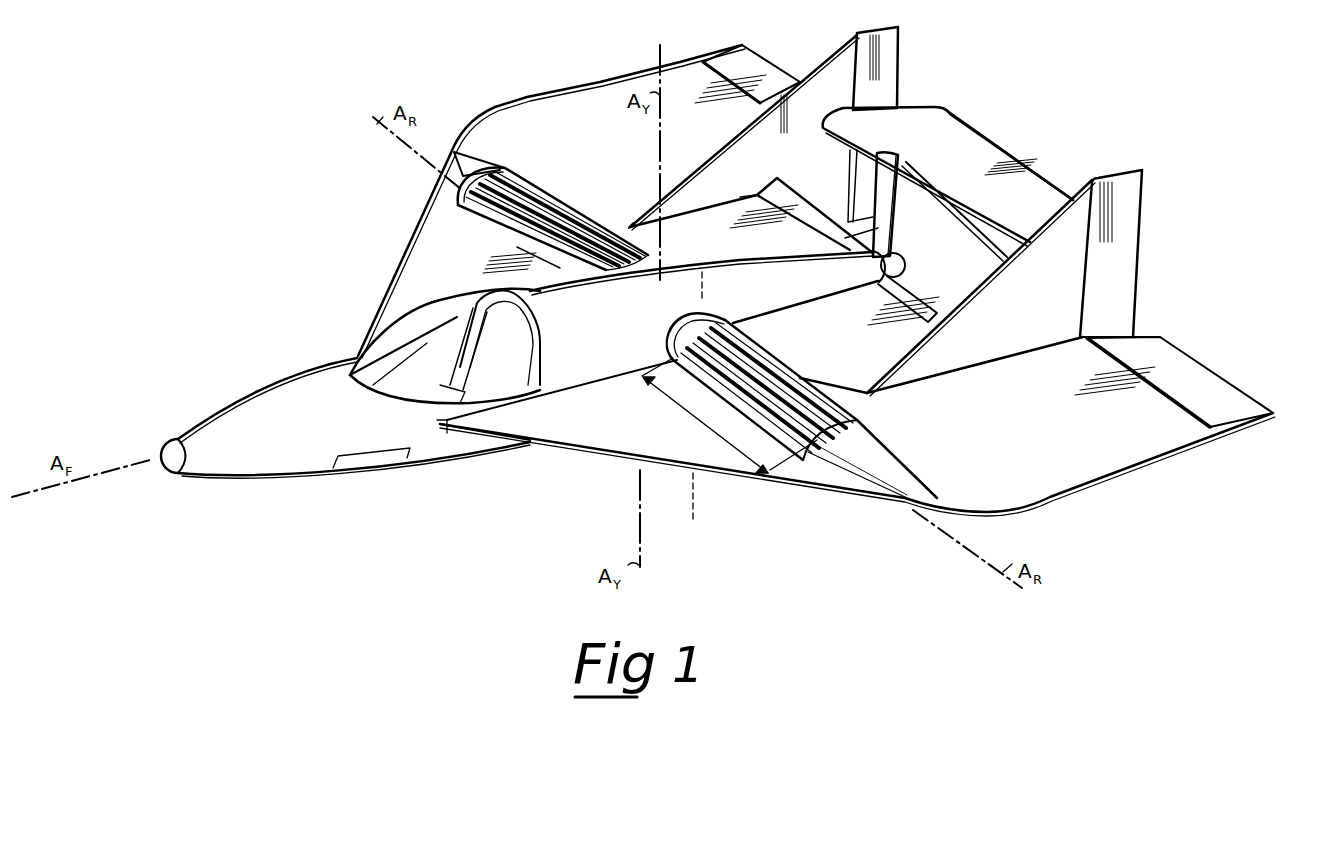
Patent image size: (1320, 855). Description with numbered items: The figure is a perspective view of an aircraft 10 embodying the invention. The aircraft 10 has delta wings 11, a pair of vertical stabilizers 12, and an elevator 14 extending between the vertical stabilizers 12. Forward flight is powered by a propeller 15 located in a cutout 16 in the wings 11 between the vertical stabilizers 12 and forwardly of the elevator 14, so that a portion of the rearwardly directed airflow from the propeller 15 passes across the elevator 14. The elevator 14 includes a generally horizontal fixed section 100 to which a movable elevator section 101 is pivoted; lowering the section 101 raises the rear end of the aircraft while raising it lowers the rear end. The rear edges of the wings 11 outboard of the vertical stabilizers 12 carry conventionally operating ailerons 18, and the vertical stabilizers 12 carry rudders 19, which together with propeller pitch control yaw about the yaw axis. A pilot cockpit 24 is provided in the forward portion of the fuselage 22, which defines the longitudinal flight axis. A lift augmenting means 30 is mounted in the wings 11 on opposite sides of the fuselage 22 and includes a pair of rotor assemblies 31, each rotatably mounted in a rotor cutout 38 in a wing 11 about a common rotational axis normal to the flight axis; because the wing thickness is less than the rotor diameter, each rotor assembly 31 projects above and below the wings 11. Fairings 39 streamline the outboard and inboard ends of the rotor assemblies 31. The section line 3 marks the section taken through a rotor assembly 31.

The section line 3- 3 is at (703, 275).
The aircraft 10 is at (325, 352).
The delta wings 11 is at (400, 266).
The vertical stabilizers 12 is at (973, 365).
The elevator 14 is at (948, 174).
The propeller 15 is at (893, 232).
The cutout 16 is at (940, 295).
The ailerons 18 is at (763, 63).
The rudders 19 is at (893, 63).
The fuselage 22 is at (478, 446).
The pilot cockpit 24 is at (463, 307).
The lift augmenting means 30 is at (657, 304).
The rotor assemblies 31 is at (556, 168).
The rotor cutout 38 is at (517, 247).
The fairings 39 is at (470, 164).
The fixed section 100 is at (997, 247).
The movable elevator section 101 is at (1000, 153).